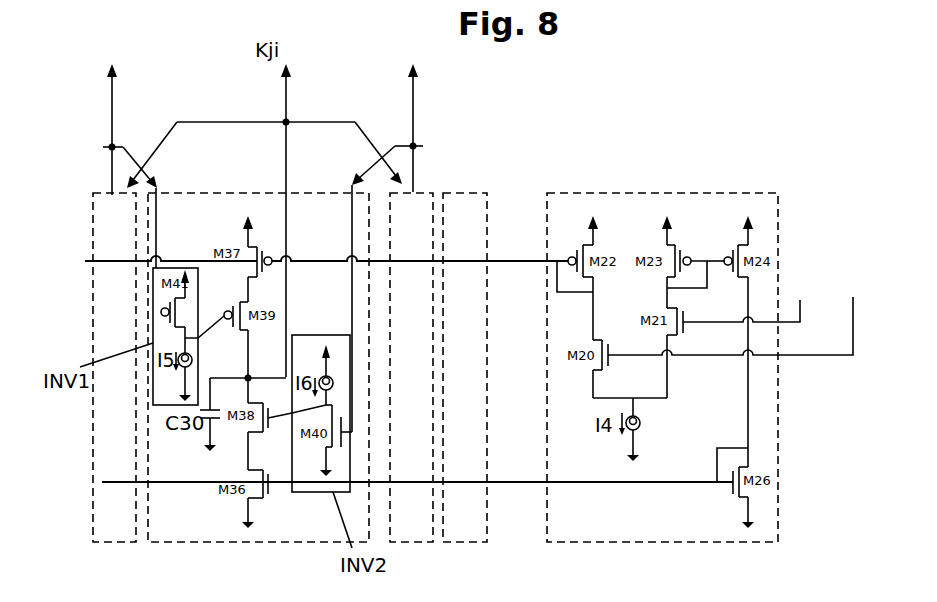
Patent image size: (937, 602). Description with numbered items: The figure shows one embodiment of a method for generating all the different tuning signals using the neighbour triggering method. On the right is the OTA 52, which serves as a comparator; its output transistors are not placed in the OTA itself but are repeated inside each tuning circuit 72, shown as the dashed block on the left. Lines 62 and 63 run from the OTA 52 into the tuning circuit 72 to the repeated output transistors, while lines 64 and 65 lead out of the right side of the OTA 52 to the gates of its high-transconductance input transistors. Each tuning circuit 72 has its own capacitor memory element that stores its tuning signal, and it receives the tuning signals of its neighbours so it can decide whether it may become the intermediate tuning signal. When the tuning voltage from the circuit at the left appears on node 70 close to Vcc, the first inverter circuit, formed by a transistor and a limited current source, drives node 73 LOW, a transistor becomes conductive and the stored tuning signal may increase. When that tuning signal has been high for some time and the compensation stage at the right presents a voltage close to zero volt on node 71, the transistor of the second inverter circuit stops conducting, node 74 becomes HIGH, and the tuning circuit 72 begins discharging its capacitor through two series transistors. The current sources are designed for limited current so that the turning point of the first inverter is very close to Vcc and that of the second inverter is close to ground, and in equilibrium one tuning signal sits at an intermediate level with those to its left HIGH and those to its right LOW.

The OTA 52 is at (547, 533).
The upper supply/bias line 62 is at (493, 259).
The lower bias line 63 is at (498, 481).
The output line 64 is at (800, 312).
The output line 65 is at (853, 312).
The node 70 is at (157, 242).
The node 71 is at (349, 215).
The tuning circuit 72 is at (259, 544).
The node 73 is at (210, 333).
The node 74 is at (288, 420).